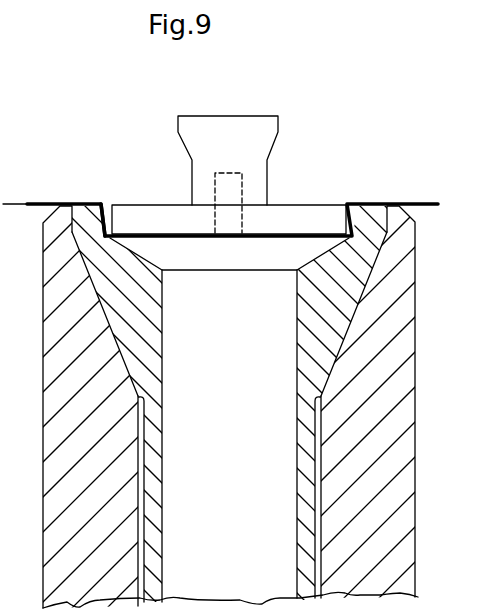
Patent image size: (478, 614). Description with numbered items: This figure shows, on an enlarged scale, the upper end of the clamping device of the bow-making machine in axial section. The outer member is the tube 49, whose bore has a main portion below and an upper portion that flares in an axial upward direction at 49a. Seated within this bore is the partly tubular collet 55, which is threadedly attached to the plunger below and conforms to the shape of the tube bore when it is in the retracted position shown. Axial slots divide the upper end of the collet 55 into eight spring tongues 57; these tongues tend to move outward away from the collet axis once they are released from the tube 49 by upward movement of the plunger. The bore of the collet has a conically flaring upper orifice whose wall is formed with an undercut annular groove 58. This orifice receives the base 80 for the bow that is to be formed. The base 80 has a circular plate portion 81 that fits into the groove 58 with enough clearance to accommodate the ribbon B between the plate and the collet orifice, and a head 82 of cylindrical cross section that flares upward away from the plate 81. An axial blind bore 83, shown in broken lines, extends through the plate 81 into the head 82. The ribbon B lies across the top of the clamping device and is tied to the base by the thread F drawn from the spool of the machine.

The tube 49 is at (55, 400).
The flaring upper portion of tube 49a is at (110, 318).
The collet 55 is at (152, 453).
The spring tongues 57 is at (110, 292).
The undercut annular groove 58 is at (100, 229).
The base 80 is at (238, 159).
The circular plate portion 81 is at (285, 217).
The head 82 is at (211, 117).
The axial blind bore 83 is at (216, 187).
The thread F is at (38, 203).
The ribbon B is at (16, 205).